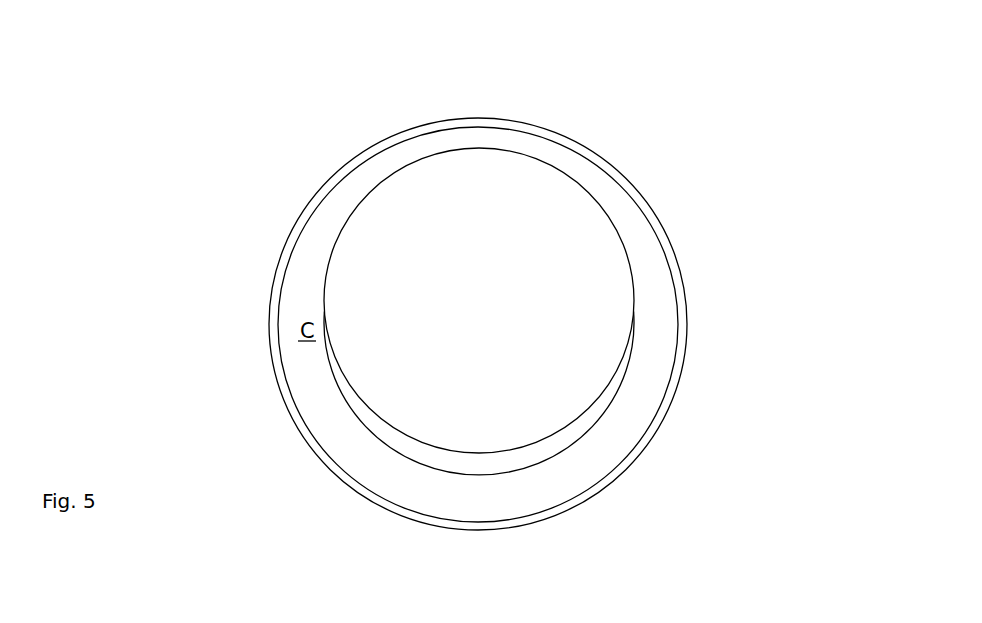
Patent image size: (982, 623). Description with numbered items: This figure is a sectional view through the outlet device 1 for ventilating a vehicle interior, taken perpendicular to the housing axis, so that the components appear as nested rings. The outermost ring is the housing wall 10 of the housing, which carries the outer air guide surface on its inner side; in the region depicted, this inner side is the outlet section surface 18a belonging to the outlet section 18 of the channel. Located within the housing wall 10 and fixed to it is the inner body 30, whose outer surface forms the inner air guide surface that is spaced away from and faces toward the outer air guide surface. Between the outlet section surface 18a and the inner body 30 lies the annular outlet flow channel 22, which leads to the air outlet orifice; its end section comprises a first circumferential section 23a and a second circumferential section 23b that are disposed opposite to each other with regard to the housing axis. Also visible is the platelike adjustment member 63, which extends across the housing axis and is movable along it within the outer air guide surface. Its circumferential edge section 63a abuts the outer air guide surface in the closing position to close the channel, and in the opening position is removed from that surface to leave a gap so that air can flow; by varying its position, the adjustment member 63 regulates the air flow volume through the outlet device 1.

The outlet device 1 is at (260, 182).
The housing wall 10 is at (329, 183).
The outlet section 18 is at (685, 338).
The outlet section surface 18a is at (665, 395).
The outlet flow channel 22 is at (667, 300).
The first circumferential section 23a is at (471, 505).
The second circumferential section 23b is at (555, 147).
The inner body 30 is at (566, 440).
The adjustment member 63 is at (567, 230).
The circumferential edge section 63a is at (484, 127).